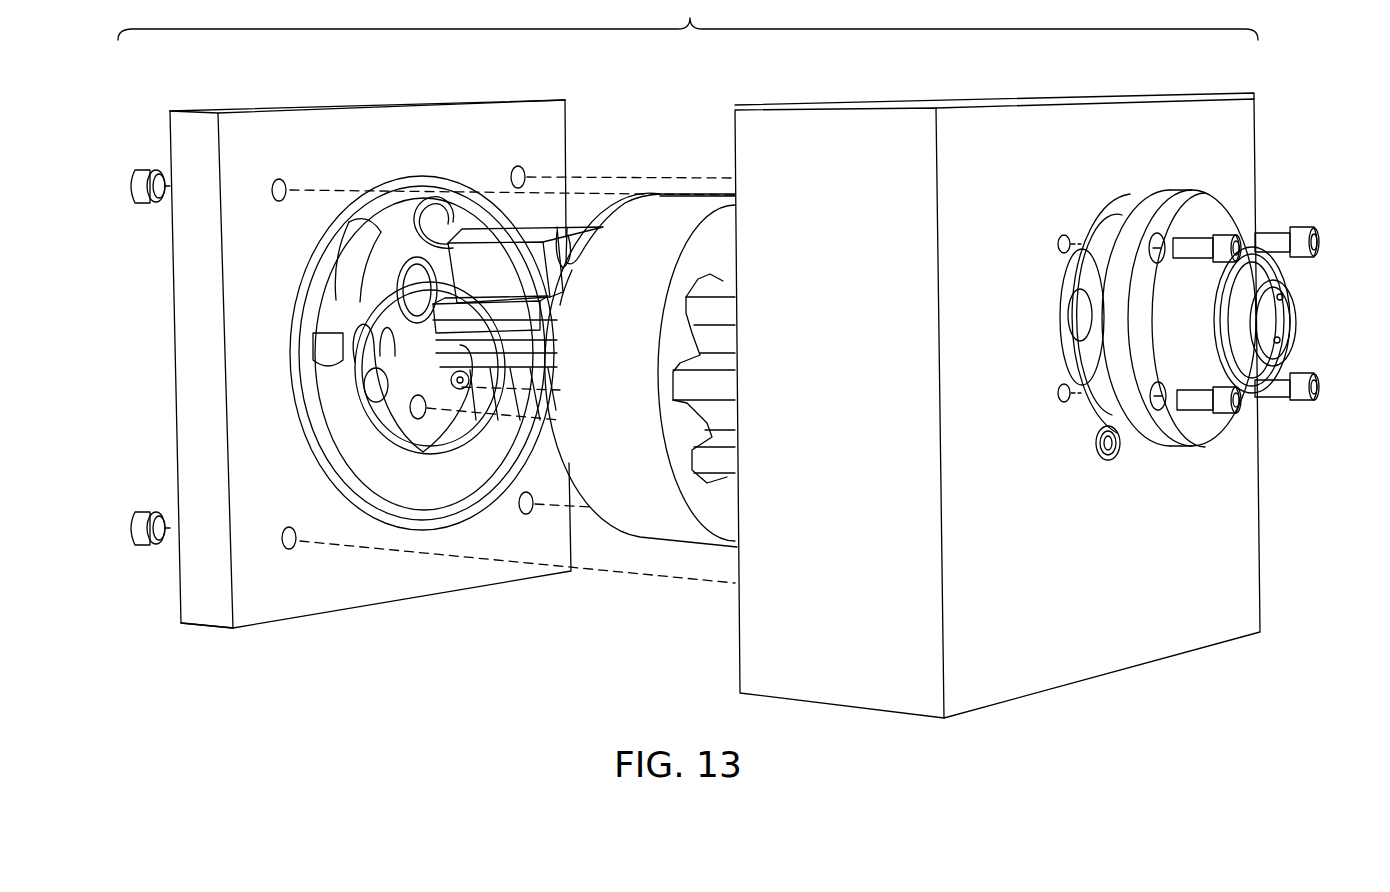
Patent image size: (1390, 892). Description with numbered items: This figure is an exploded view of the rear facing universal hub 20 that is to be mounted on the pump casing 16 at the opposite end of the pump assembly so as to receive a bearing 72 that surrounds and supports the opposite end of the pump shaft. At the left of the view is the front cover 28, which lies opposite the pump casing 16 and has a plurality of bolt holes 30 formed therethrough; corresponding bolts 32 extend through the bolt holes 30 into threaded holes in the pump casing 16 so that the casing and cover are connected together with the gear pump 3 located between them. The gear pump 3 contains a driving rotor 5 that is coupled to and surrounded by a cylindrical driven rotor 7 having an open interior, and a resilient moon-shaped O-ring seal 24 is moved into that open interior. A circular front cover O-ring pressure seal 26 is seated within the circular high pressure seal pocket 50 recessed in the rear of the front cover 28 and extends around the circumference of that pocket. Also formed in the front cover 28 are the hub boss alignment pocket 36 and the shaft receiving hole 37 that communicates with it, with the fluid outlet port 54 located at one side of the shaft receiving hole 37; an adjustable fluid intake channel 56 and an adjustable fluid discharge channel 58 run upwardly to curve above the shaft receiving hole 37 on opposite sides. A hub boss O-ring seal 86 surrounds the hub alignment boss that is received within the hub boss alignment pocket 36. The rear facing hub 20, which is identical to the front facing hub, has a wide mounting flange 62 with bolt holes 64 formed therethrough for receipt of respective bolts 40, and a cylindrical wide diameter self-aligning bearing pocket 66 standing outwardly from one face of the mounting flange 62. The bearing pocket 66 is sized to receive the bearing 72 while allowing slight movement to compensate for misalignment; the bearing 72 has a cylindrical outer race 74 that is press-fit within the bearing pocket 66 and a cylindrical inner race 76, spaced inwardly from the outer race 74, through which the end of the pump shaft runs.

The gear pump 3 is at (631, 537).
The driving rotor 5 is at (575, 225).
The driven rotor 7 is at (668, 200).
The pump casing 16 is at (822, 130).
The rear facing hub 20 is at (1235, 174).
The O-ring seal 24 is at (385, 428).
The front cover O-ring pressure seal 26 is at (305, 412).
The front cover 28 is at (338, 112).
The bolt holes 30 is at (279, 178).
The bolts 32 is at (130, 186).
The hub boss alignment pocket 36 is at (1062, 280).
The shaft receiving hole 37 is at (415, 280).
The bolts 40 is at (1188, 242).
The high pressure seal pocket 50 is at (302, 287).
The fluid outlet port 54 is at (320, 348).
The fluid intake channel 56 is at (437, 218).
The fluid discharge channel 58 is at (347, 253).
The mounting flange 62 is at (1150, 202).
The bolt holes 64 is at (1150, 240).
The self-aligning bearing pocket 66 is at (1167, 303).
The bearing 72 is at (1299, 331).
The outer race 74 is at (1237, 283).
The inner race 76 is at (1245, 346).
The hub boss O-ring seal 86 is at (1100, 350).